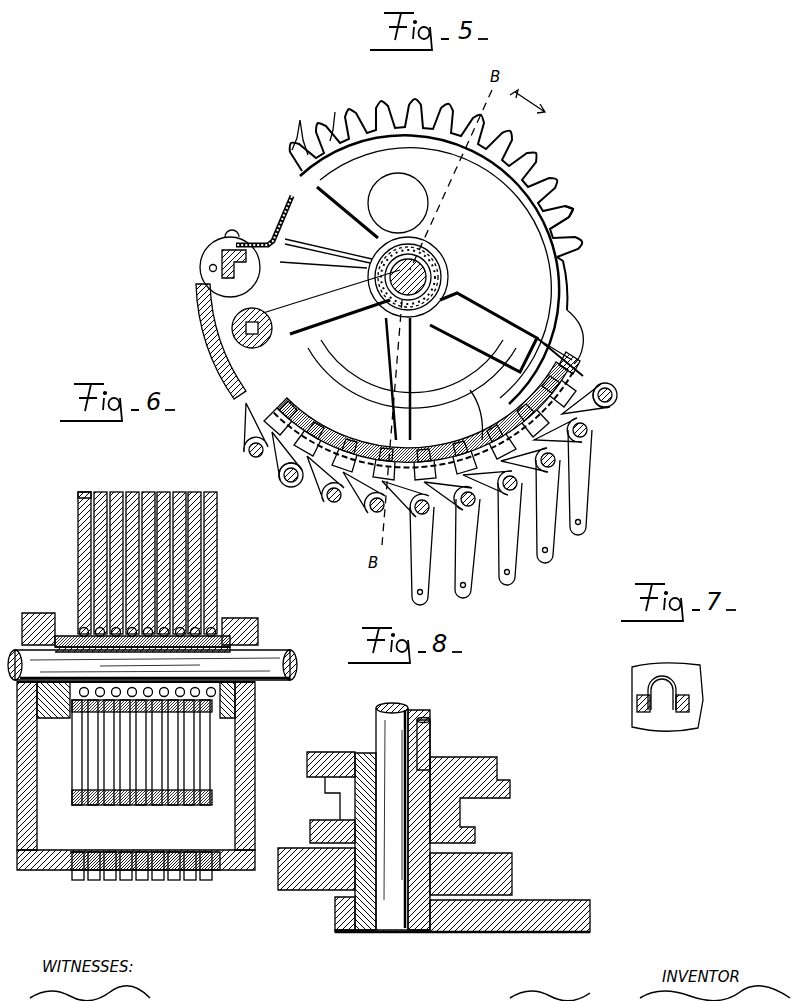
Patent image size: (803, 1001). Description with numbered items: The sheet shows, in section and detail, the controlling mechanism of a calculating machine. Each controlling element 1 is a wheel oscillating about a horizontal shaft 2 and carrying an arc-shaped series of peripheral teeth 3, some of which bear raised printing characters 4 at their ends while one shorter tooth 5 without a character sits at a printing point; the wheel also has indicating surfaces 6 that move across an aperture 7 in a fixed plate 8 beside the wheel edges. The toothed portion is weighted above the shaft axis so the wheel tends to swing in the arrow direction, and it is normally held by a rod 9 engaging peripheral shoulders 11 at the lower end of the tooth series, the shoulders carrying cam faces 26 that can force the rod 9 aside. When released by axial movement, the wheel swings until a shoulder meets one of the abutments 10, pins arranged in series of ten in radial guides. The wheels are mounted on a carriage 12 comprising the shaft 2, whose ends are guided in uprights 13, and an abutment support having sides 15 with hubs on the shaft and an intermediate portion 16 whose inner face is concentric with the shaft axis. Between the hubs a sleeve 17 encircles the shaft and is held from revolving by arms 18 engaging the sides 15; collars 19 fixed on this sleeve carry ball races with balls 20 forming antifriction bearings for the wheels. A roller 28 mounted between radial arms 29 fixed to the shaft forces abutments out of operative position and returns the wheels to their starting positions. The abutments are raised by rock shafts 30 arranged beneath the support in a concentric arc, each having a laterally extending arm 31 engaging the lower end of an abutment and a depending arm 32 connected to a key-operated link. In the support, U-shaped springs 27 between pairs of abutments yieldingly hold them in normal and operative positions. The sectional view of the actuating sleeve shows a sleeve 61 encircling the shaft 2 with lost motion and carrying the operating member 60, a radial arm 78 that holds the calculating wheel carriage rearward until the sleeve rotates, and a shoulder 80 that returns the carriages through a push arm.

In FIG. 5, the controlling element 1 is at (532, 182).
In FIG. 6, the controlling element 1 is at (176, 492).
In FIG. 5, the horizontal shaft 2 is at (428, 277).
In FIG. 6, the horizontal shaft 2 is at (290, 670).
In FIG. 8, the horizontal shaft 2 is at (410, 712).
In FIG. 5, the peripheral teeth 3 is at (300, 120).
In FIG. 5, the raised printing characters 4 is at (335, 112).
In FIG. 6, the raised printing characters 4 is at (99, 492).
In FIG. 5, the shorter tooth 5 is at (575, 213).
In FIG. 5, the indicating surfaces 6 is at (298, 195).
In FIG. 5, the aperture 7 is at (286, 203).
In FIG. 5, the fixed plate 8 is at (278, 232).
In FIG. 5, the rod 9 is at (582, 362).
In FIG. 5, the abutments 10 is at (262, 425).
In FIG. 6, the abutments 10 is at (118, 875).
In FIG. 7, the abutments 10 is at (637, 702).
In FIG. 5, the peripheral shoulders 11 is at (575, 347).
In FIG. 5, the carriage 12 is at (304, 265).
In FIG. 6, the carriage 12 is at (256, 722).
In FIG. 8, the uprights 13 is at (515, 872).
In FIG. 5, the sides 15 is at (392, 388).
In FIG. 6, the sides 15 is at (14, 858).
In FIG. 5, the intermediate portion 16 is at (398, 440).
In FIG. 6, the intermediate portion 16 is at (62, 860).
In FIG. 7, the intermediate portion 16 is at (698, 720).
In FIG. 5, the sleeve 17 is at (426, 266).
In FIG. 6, the sleeve 17 is at (215, 635).
In FIG. 5, the arms 18 is at (330, 258).
In FIG. 5, the collars 19 is at (432, 270).
In FIG. 6, the collars 19 is at (70, 635).
In FIG. 5, the balls 20 is at (438, 273).
In FIG. 6, the balls 20 is at (115, 703).
In FIG. 5, the cam faces 26 is at (578, 330).
In FIG. 5, the springs 27 is at (332, 440).
In FIG. 7, the springs 27 is at (688, 688).
In FIG. 5, the roller 28 is at (300, 322).
In FIG. 5, the radial arms 29 is at (335, 312).
In FIG. 6, the radial arms 29 is at (40, 613).
In FIG. 5, the rock shafts 30 is at (600, 428).
In FIG. 5, the laterally extending arm 31 is at (275, 450).
In FIG. 5, the depending arm 32 is at (546, 497).
In FIG. 8, the operating member 60 is at (495, 920).
In FIG. 8, the sleeve 61 is at (418, 930).
In FIG. 8, the radial arm 78 is at (510, 790).
In FIG. 8, the shoulder 80 is at (430, 740).